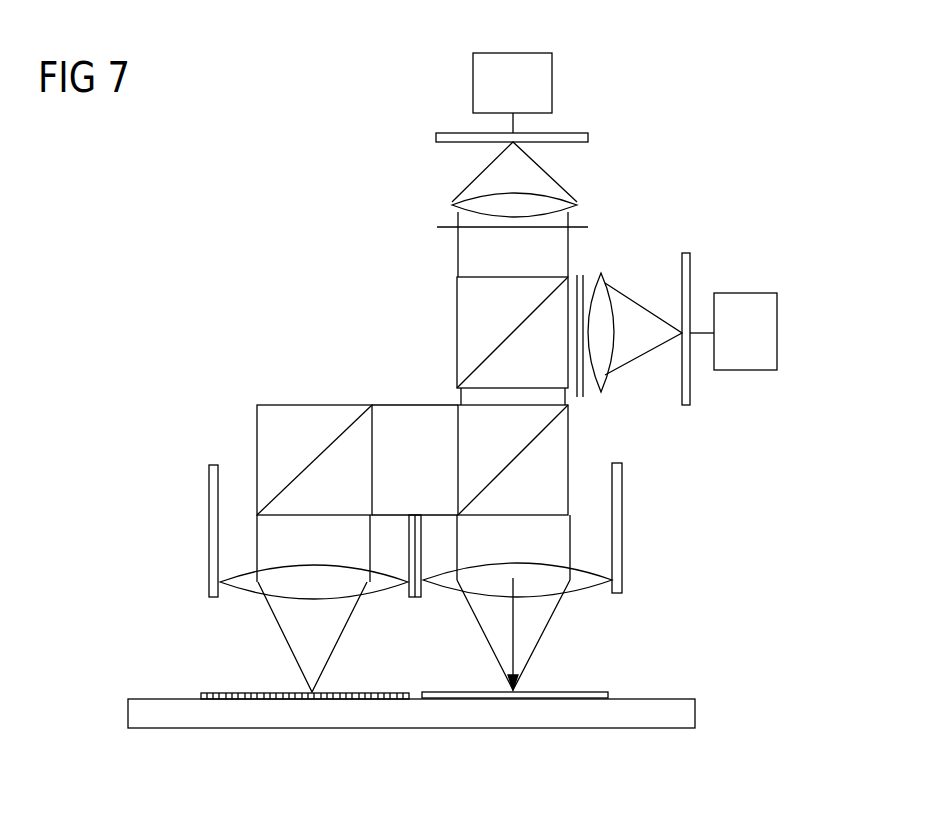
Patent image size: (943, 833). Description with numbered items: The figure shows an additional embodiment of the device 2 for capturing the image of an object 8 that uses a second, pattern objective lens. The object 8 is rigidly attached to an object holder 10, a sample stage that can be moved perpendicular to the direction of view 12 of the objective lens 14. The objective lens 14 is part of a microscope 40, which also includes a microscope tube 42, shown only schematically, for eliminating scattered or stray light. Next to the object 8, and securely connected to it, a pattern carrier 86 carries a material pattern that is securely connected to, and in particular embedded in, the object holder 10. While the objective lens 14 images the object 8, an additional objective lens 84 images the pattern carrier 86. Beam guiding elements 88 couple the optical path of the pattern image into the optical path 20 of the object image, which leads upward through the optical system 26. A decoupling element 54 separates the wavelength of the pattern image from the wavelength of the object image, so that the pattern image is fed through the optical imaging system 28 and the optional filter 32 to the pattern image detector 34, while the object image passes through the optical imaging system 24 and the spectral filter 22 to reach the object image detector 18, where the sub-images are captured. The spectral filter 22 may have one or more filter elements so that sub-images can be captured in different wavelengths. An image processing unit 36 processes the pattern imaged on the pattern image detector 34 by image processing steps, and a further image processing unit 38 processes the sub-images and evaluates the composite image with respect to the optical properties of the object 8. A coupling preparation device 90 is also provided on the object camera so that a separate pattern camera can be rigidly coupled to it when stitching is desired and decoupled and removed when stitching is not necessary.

The device 2 is at (650, 148).
The object 8 is at (452, 702).
The object holder 10 is at (522, 720).
The direction of view 12 is at (515, 625).
The objective lens 14 is at (592, 583).
The object image detector 18 is at (430, 135).
The optical path 20 is at (495, 168).
The spectral filter 22 is at (437, 227).
The optical imaging system 24 is at (482, 207).
The optical system 26 is at (618, 252).
The optical imaging system 28 is at (603, 370).
The filter 32 is at (583, 392).
The pattern image detector 34 is at (692, 387).
The image processing unit 36 is at (765, 358).
The image processing unit 38 is at (490, 80).
The microscope 40 is at (635, 578).
The microscope tube 42 is at (622, 503).
The decoupling element 54 is at (465, 332).
The additional objective lens 84 is at (243, 583).
The pattern carrier 86 is at (212, 692).
The beam guiding elements 88 is at (295, 415).
The coupling preparation device 90 is at (407, 597).